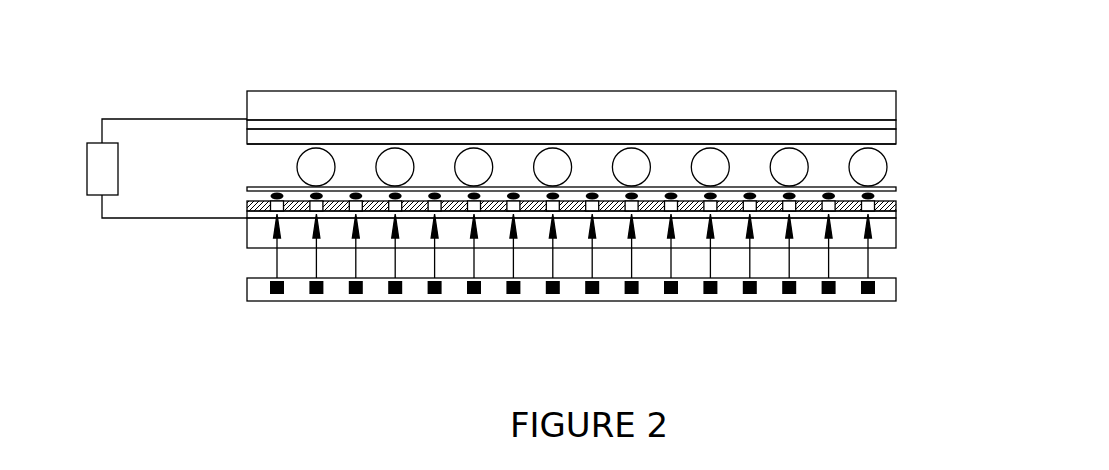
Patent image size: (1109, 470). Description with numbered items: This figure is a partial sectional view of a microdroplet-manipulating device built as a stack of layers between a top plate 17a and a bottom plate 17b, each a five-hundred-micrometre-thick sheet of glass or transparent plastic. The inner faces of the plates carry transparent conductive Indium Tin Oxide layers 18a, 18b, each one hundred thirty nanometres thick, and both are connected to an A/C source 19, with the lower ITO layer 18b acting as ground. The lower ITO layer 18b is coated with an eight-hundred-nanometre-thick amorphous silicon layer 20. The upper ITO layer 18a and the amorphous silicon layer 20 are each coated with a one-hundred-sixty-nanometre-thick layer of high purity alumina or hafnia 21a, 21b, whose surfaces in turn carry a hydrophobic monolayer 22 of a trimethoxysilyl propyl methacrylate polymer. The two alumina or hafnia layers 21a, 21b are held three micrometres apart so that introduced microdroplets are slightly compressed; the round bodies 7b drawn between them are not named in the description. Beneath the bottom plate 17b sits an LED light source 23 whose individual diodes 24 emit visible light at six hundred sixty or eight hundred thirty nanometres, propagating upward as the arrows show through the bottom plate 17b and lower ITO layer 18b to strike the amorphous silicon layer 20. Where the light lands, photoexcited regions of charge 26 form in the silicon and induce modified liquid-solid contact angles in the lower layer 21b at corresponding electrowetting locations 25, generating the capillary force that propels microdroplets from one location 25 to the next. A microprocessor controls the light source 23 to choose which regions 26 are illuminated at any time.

The A/C source 19 is at (90, 143).
The top plate 17a is at (867, 91).
The upper ITO layer 18a is at (896, 122).
The upper alumina or hafnia layer 21a is at (896, 135).
The hydrophobic monolayer 22 is at (247, 146).
The spacer particles 7b is at (888, 167).
The lower alumina or hafnia layer 21b is at (874, 196).
The electrowetting locations 25 is at (270, 197).
The amorphous silicon layer 20 is at (896, 208).
The photoexcited regions of charge 26 is at (277, 206).
The lower ITO layer 18b is at (890, 220).
The bottom plate 17b is at (887, 237).
The LED light source 23 is at (868, 300).
The diode 24 is at (670, 294).